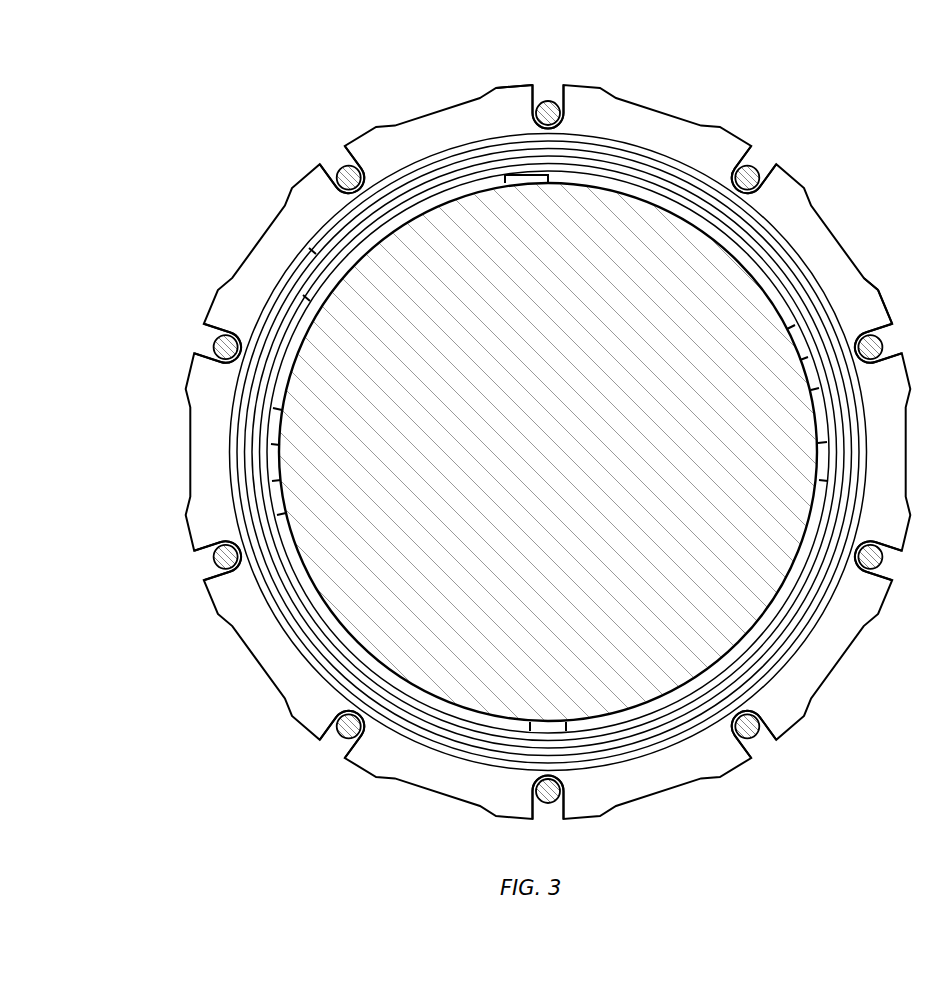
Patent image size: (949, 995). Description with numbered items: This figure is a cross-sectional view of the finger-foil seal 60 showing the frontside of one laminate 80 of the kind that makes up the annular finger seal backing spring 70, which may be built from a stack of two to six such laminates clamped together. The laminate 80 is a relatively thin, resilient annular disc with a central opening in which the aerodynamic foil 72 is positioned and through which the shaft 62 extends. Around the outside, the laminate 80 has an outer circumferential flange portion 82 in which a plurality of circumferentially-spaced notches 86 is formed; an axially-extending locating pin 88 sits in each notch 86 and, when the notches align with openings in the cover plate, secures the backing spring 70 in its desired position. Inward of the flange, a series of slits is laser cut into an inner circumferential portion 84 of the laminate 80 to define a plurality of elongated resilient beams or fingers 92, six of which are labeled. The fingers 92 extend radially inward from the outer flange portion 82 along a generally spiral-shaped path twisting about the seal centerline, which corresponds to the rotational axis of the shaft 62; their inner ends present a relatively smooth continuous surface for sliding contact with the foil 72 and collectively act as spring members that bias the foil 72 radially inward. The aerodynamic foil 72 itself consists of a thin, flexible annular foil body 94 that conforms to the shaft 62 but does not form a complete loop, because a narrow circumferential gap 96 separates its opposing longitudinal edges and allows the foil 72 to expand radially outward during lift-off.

The finger-foil seal 60 is at (546, 452).
The shaft 62 is at (549, 452).
The finger seal backing spring 70 is at (840, 238).
The aerodynamic foil 72 is at (627, 205).
The laminate 80 is at (505, 98).
The outer circumferential flange portion 82 is at (880, 290).
The inner circumferential portion 84 is at (893, 455).
The notches 86 is at (552, 96).
The locating pin 88 is at (556, 116).
The fingers 92 is at (784, 308).
The annular foil body 94 is at (716, 248).
The circumferential gap 96 is at (548, 185).